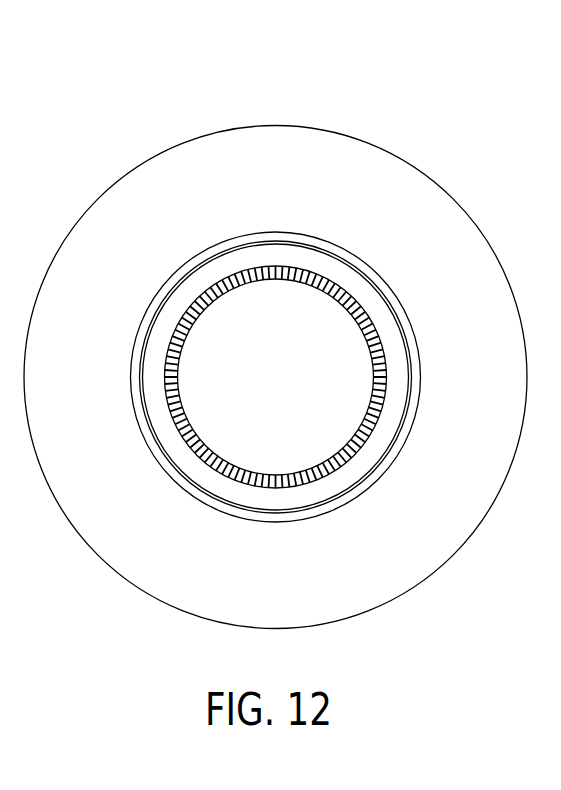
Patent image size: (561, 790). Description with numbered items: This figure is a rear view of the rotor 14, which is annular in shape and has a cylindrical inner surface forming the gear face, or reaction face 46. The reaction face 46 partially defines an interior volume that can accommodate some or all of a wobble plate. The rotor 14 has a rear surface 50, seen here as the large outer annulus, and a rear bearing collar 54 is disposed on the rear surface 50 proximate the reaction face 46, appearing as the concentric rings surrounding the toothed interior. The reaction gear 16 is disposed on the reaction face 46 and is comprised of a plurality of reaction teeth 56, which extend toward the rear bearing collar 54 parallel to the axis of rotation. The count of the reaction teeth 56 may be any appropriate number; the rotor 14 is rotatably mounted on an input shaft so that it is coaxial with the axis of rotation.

The rotor 14 is at (275, 332).
The reaction gear 16 is at (276, 380).
The reaction face 46 is at (288, 495).
The rear surface 50 is at (397, 585).
The rear bearing collar 54 is at (398, 453).
The reaction teeth 56 is at (182, 348).